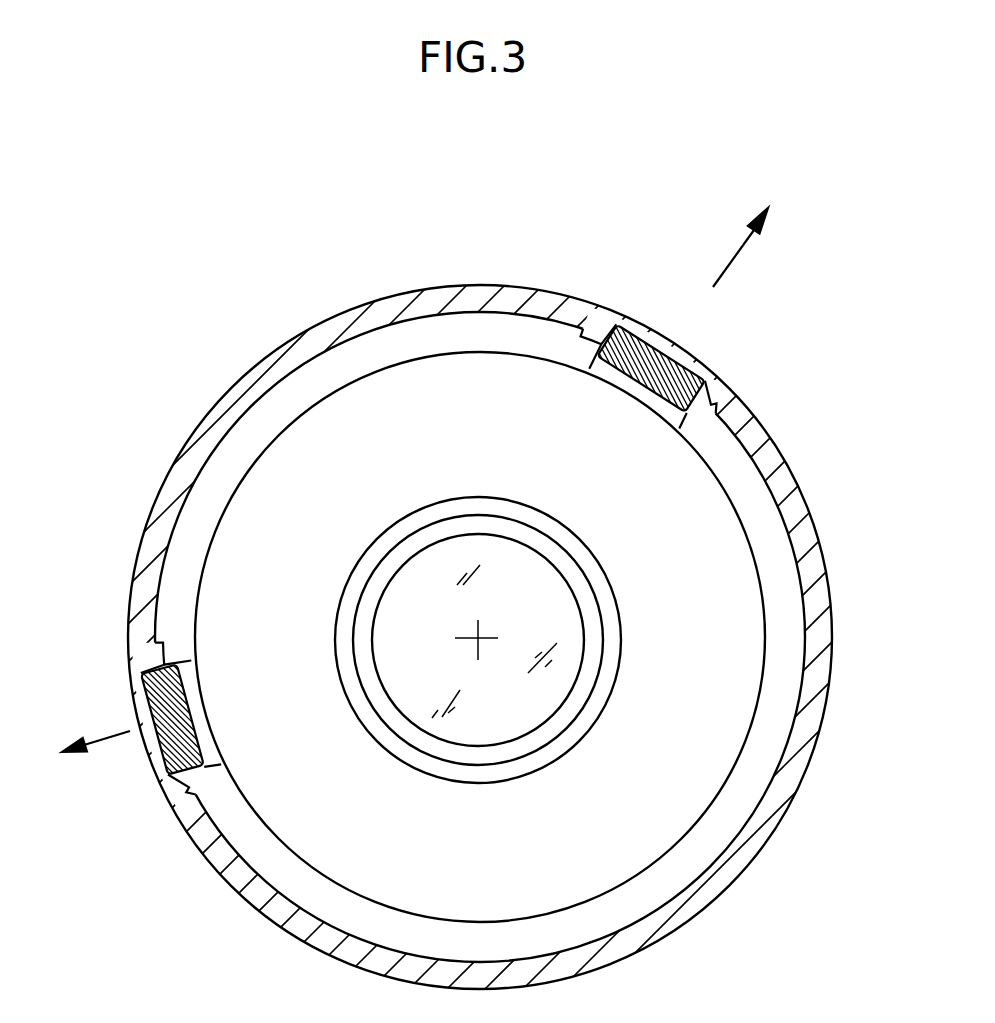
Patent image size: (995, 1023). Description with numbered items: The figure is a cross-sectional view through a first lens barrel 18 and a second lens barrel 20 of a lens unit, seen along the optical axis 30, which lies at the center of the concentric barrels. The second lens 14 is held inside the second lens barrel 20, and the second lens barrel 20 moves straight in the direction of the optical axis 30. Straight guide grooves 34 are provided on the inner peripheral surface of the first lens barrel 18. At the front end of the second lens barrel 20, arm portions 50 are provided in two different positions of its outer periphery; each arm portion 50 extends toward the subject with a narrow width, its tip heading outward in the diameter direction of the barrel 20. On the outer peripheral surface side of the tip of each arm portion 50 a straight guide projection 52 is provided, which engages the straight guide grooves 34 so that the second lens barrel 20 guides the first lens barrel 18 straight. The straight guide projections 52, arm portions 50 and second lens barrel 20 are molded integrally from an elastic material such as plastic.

The second lens 14 is at (556, 595).
The first lens barrel 18 is at (805, 480).
The second lens barrel 20 is at (772, 556).
The optical axis 30 is at (476, 636).
The straight guide grooves 34 is at (628, 333).
The arm portions 50 is at (641, 393).
The straight guide projection 52 is at (703, 376).